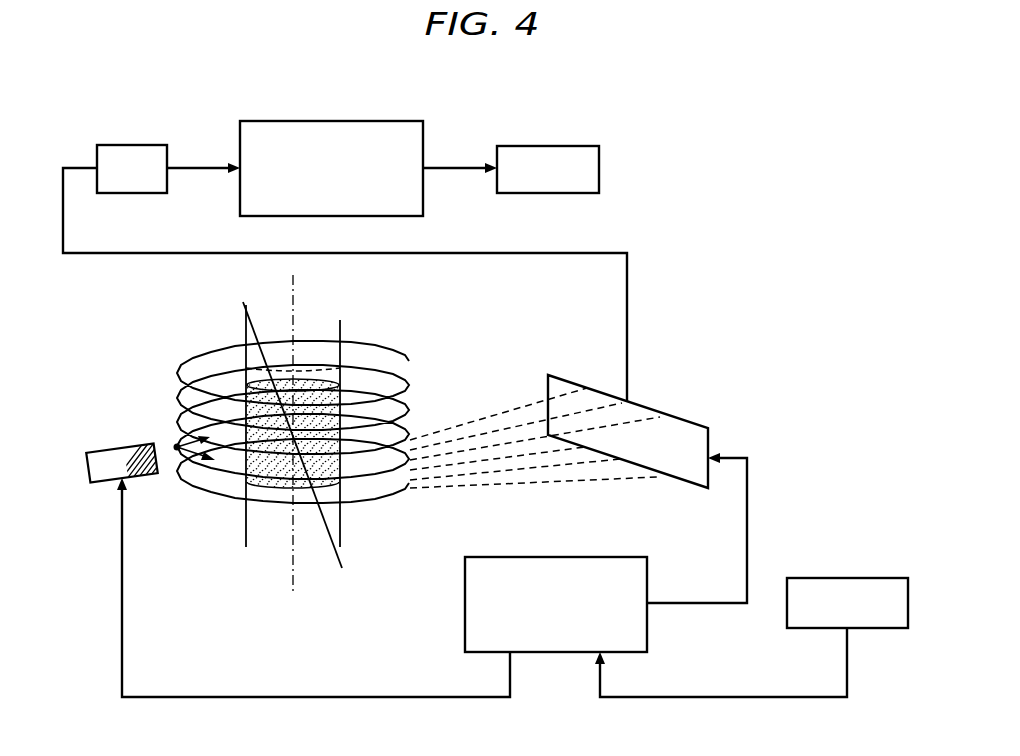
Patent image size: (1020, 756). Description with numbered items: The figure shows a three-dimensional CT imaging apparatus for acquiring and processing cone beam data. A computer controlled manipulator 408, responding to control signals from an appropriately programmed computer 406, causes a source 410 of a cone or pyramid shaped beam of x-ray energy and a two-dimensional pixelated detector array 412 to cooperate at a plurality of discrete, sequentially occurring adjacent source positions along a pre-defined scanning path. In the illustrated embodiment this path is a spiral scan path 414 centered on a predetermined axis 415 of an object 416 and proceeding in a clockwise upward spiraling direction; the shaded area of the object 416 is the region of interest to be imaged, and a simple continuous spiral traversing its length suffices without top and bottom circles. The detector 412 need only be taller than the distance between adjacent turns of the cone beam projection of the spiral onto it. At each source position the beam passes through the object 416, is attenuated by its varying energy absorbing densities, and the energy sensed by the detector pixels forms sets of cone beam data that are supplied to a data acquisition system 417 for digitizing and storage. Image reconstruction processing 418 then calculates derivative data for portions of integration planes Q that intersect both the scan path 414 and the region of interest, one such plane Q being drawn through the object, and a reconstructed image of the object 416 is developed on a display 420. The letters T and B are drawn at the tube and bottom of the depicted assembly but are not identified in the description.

The computer 406 is at (882, 578).
The computer controlled manipulator 408 is at (612, 557).
The source 410 is at (106, 452).
The two-dimensional pixelated detector array 412 is at (688, 420).
The spiral scan path 414 is at (177, 397).
The axis 415 is at (293, 290).
The object 416 is at (408, 395).
The data acquisition system (DAS) 417 is at (112, 145).
The image reconstruction processing 418 is at (288, 121).
The display 420 is at (550, 146).
The integration plane Q is at (242, 306).
The tube T is at (376, 352).
The bottom B is at (362, 500).